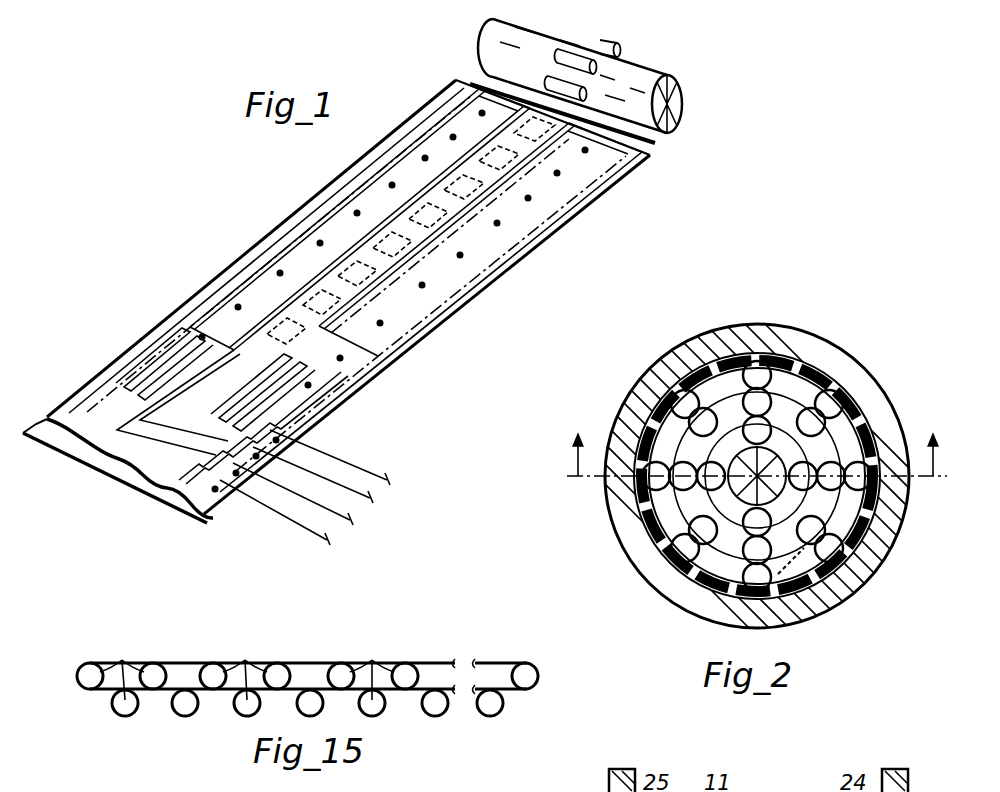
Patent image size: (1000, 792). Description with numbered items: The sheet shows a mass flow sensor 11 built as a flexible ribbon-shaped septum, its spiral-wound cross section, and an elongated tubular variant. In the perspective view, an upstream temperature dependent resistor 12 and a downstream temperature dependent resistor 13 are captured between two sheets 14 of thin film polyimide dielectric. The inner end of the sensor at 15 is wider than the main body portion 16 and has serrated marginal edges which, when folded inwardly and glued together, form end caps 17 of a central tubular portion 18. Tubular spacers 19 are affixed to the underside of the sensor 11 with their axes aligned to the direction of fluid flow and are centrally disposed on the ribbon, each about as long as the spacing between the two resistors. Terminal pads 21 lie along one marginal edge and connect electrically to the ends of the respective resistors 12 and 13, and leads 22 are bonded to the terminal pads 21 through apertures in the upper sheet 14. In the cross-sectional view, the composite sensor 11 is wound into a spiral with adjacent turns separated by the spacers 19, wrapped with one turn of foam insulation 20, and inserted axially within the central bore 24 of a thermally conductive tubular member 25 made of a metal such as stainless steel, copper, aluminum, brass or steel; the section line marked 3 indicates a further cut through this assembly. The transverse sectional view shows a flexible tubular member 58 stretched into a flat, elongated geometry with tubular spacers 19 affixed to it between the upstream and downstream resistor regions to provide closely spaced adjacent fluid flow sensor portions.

In FIG. 1, the mass flow sensor 11 is at (438, 334).
In FIG. 2, the mass flow sensor 11 is at (666, 501).
In FIG. 1, the upstream temperature dependent resistor 12 is at (160, 356).
In FIG. 1, the downstream temperature dependent resistor 13 is at (338, 404).
In FIG. 1, the sheets of thin film dielectric material 14 is at (104, 393).
In FIG. 1, the inner end of the sensor 15 is at (663, 140).
In FIG. 1, the main body portion 16 is at (166, 312).
In FIG. 1, the end caps 17 is at (692, 104).
In FIG. 2, the end caps 17 is at (766, 466).
In FIG. 1, the central tubular portion 18 is at (640, 72).
In FIG. 2, the central tubular portion 18 is at (743, 494).
In FIG. 1, the tubular spacers 19 is at (572, 52).
In FIG. 2, the tubular spacers 19 is at (742, 387).
In FIG. 15, the tubular spacers 19 is at (307, 676).
In FIG. 2, the foam insulation 20 is at (840, 565).
In FIG. 1, the terminal pads 21 is at (278, 447).
In FIG. 1, the leads 22 is at (405, 470).
In FIG. 2, the leads 22 is at (760, 548).
In FIG. 1, the central bore 24 is at (451, 246).
In FIG. 2, the central bore 24 is at (652, 426).
In FIG. 1, the thermally conductive tubular member 25 is at (342, 423).
In FIG. 2, the thermally conductive tubular member 25 is at (770, 332).
In FIG. 15, the flexible tubular member 58 is at (310, 662).
In FIG. 2, the section line 3- 3 is at (751, 467).